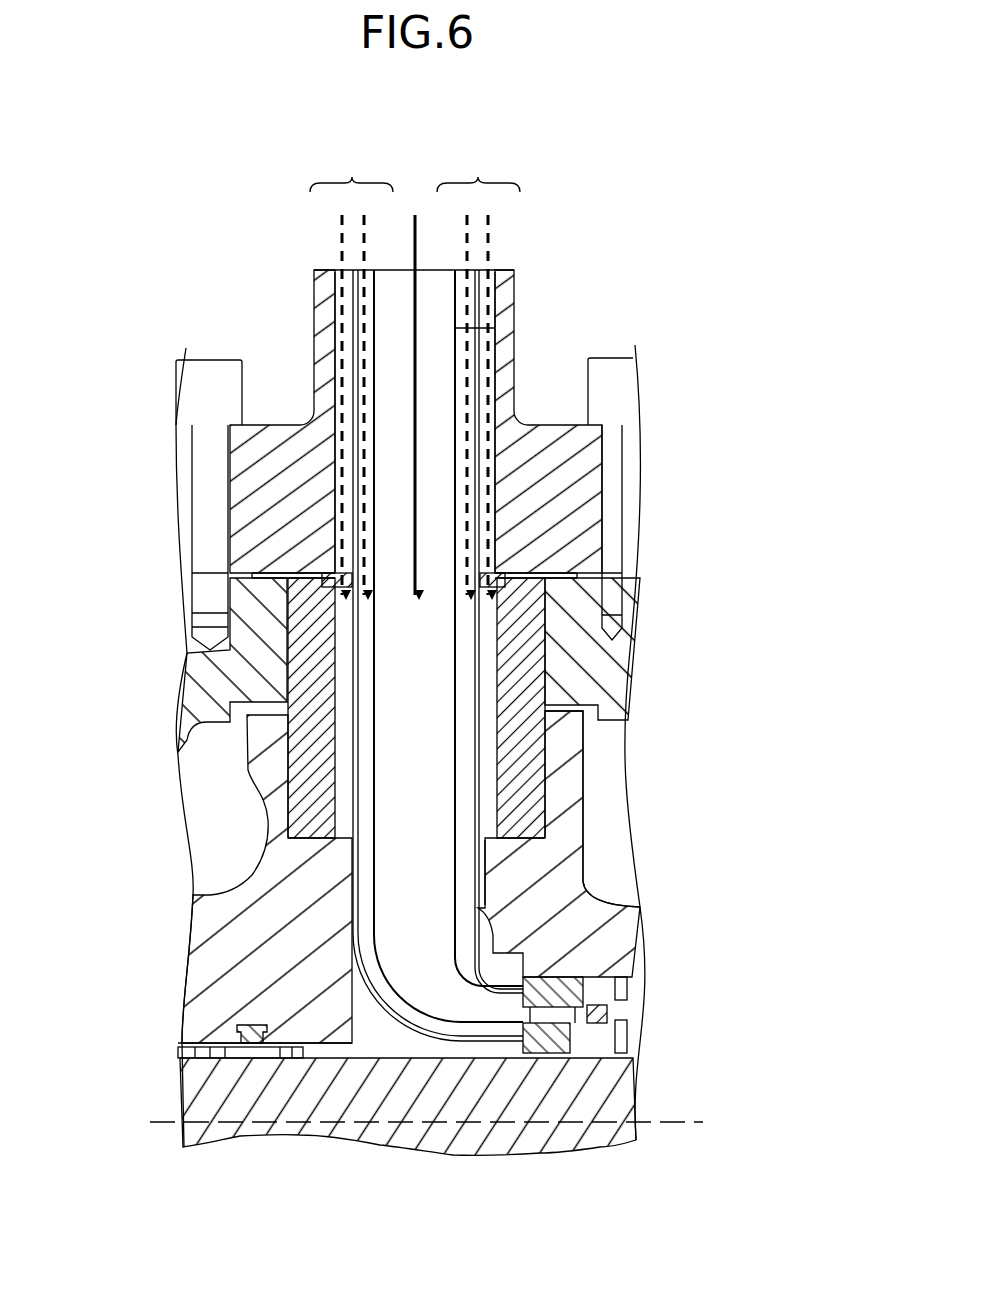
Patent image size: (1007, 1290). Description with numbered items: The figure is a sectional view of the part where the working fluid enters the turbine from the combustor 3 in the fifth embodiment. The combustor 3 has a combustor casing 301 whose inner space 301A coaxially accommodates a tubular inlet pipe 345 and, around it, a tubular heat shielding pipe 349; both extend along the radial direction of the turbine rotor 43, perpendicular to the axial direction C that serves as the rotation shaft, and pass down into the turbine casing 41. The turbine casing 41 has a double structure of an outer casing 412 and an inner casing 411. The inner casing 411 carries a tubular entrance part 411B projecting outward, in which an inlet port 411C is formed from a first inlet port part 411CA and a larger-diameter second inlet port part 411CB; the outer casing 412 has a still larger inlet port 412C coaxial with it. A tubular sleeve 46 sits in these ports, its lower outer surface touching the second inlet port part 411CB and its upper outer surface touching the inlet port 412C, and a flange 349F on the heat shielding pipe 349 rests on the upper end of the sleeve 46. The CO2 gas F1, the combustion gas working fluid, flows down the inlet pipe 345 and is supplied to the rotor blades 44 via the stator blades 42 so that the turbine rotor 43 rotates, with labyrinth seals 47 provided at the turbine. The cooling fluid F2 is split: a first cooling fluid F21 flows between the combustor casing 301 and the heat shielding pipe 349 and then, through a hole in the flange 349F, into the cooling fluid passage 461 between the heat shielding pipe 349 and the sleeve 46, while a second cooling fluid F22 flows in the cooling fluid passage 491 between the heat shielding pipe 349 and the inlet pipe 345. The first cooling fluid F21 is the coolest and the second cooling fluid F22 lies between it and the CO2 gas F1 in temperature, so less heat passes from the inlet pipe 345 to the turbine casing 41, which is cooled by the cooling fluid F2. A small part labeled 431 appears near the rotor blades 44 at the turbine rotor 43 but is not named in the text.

The combustor 3 is at (303, 395).
The combustor casing 301 is at (585, 508).
The inner space 301A is at (495, 295).
The inlet pipe 345 is at (455, 328).
The heat shielding pipe 349 is at (488, 397).
The flange 349F is at (540, 578).
The outer casing 412 is at (195, 717).
The inlet port 412C is at (545, 645).
The sleeve 46 is at (303, 658).
The inner casing 411 is at (198, 918).
The entrance part 411B is at (575, 792).
The inlet port 411C is at (733, 814).
The second inlet port part 411CB is at (540, 825).
The first inlet port part 411CA is at (480, 862).
The turbine casing 41 is at (88, 698).
The cooling fluid passage 491 is at (363, 618).
The cooling fluid passage 461 is at (338, 637).
The labyrinth seal 47 is at (250, 1045).
The turbine rotor 43 is at (427, 1132).
The stator blade 42 is at (543, 1060).
The bearing race 431 is at (596, 1024).
The rotor blade 44 is at (620, 1053).
The axial direction C is at (688, 1128).
The CO2 gas F1 is at (417, 375).
The cooling fluid F2 is at (415, 174).
The first cooling fluid F21 is at (416, 392).
The second cooling fluid F22 is at (415, 392).